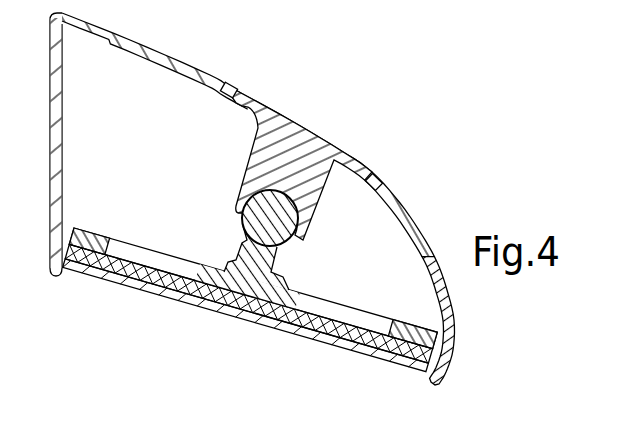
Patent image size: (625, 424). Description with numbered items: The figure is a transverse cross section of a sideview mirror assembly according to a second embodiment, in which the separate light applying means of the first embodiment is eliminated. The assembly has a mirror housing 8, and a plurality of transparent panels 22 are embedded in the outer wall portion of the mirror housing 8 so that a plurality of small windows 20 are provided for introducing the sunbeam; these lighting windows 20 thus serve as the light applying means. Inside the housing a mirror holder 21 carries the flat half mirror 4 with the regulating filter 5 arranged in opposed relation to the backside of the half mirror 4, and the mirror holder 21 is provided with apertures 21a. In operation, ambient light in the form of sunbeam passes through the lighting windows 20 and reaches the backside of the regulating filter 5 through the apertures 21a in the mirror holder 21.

The flat half mirror 4 is at (362, 355).
The regulating filter 5 is at (438, 356).
The mirror housing 8 is at (263, 108).
The small windows 20 is at (230, 86).
The mirror holder 21 is at (298, 291).
The apertures 21a is at (111, 240).
The transparent panels 22 is at (170, 57).